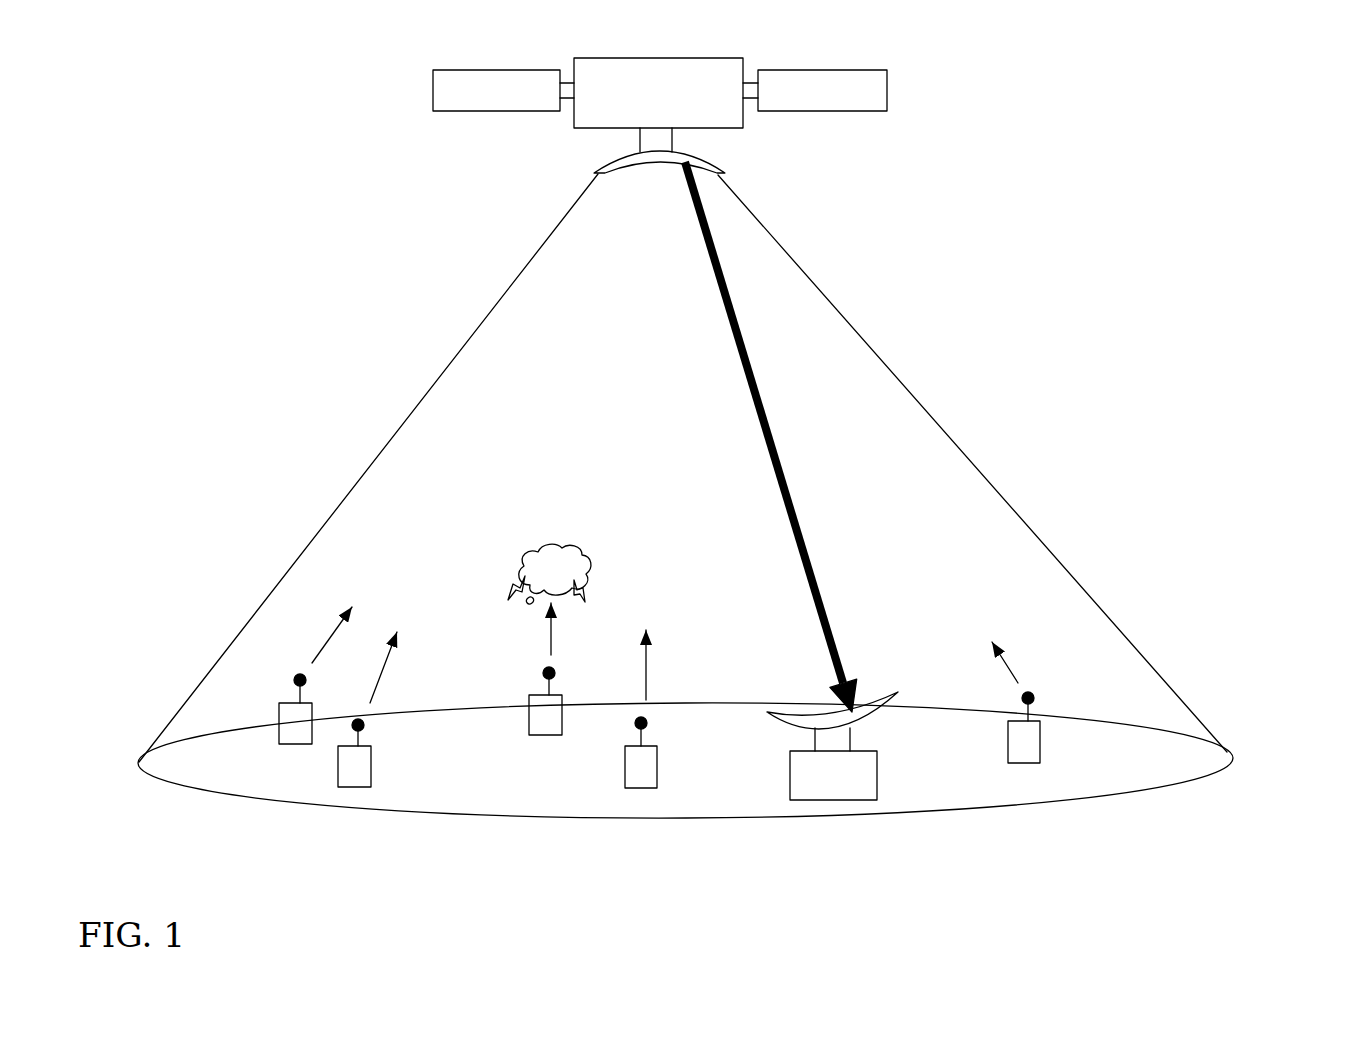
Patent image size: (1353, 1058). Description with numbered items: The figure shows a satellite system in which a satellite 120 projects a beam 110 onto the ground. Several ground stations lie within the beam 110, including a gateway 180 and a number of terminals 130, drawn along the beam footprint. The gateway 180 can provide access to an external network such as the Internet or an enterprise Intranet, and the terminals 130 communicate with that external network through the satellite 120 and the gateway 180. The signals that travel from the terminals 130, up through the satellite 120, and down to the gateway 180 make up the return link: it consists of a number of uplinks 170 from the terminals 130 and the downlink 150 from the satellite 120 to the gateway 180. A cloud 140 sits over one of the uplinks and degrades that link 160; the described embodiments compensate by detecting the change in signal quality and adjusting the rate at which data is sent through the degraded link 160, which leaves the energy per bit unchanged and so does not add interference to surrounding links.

The beam 110 is at (1148, 764).
The satellite 120 is at (678, 119).
The terminals 130 is at (298, 737).
The cloud 140 is at (568, 548).
The downlink 150 is at (798, 518).
The degraded link 160 is at (540, 634).
The uplinks 170 is at (320, 638).
The gateway 180 is at (840, 785).